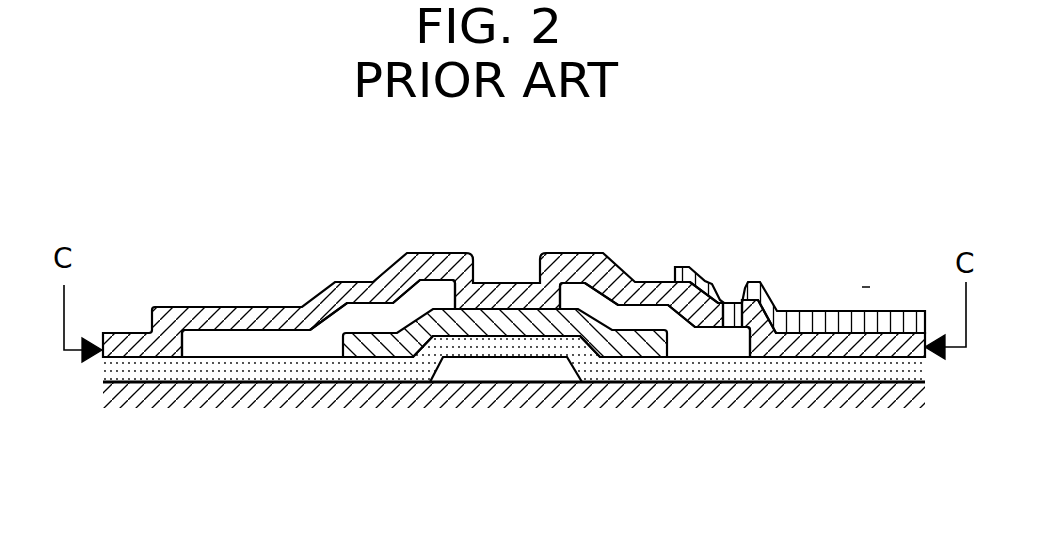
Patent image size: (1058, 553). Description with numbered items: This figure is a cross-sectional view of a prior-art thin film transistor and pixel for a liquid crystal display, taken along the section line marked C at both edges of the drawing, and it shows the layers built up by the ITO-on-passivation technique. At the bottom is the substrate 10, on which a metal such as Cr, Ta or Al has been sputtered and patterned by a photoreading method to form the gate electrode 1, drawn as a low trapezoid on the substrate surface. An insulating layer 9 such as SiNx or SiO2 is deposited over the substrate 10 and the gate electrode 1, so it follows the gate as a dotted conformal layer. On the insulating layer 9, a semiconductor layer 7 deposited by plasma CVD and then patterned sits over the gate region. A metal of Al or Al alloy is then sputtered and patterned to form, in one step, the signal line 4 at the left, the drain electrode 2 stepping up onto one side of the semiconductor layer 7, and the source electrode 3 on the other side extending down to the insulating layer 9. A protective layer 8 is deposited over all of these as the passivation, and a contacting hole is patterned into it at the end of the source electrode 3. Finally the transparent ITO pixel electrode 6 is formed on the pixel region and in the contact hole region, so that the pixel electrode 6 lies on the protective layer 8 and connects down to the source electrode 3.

The gate electrode 1 is at (471, 374).
The drain electrode 2 is at (352, 314).
The source electrode 3 is at (577, 291).
The signal line 4 is at (214, 338).
The pixel electrode 6 is at (873, 316).
The semiconductor layer 7 is at (585, 331).
The protective layer 8 is at (440, 257).
The insulating layer 9 is at (758, 372).
The substrate 10 is at (333, 384).